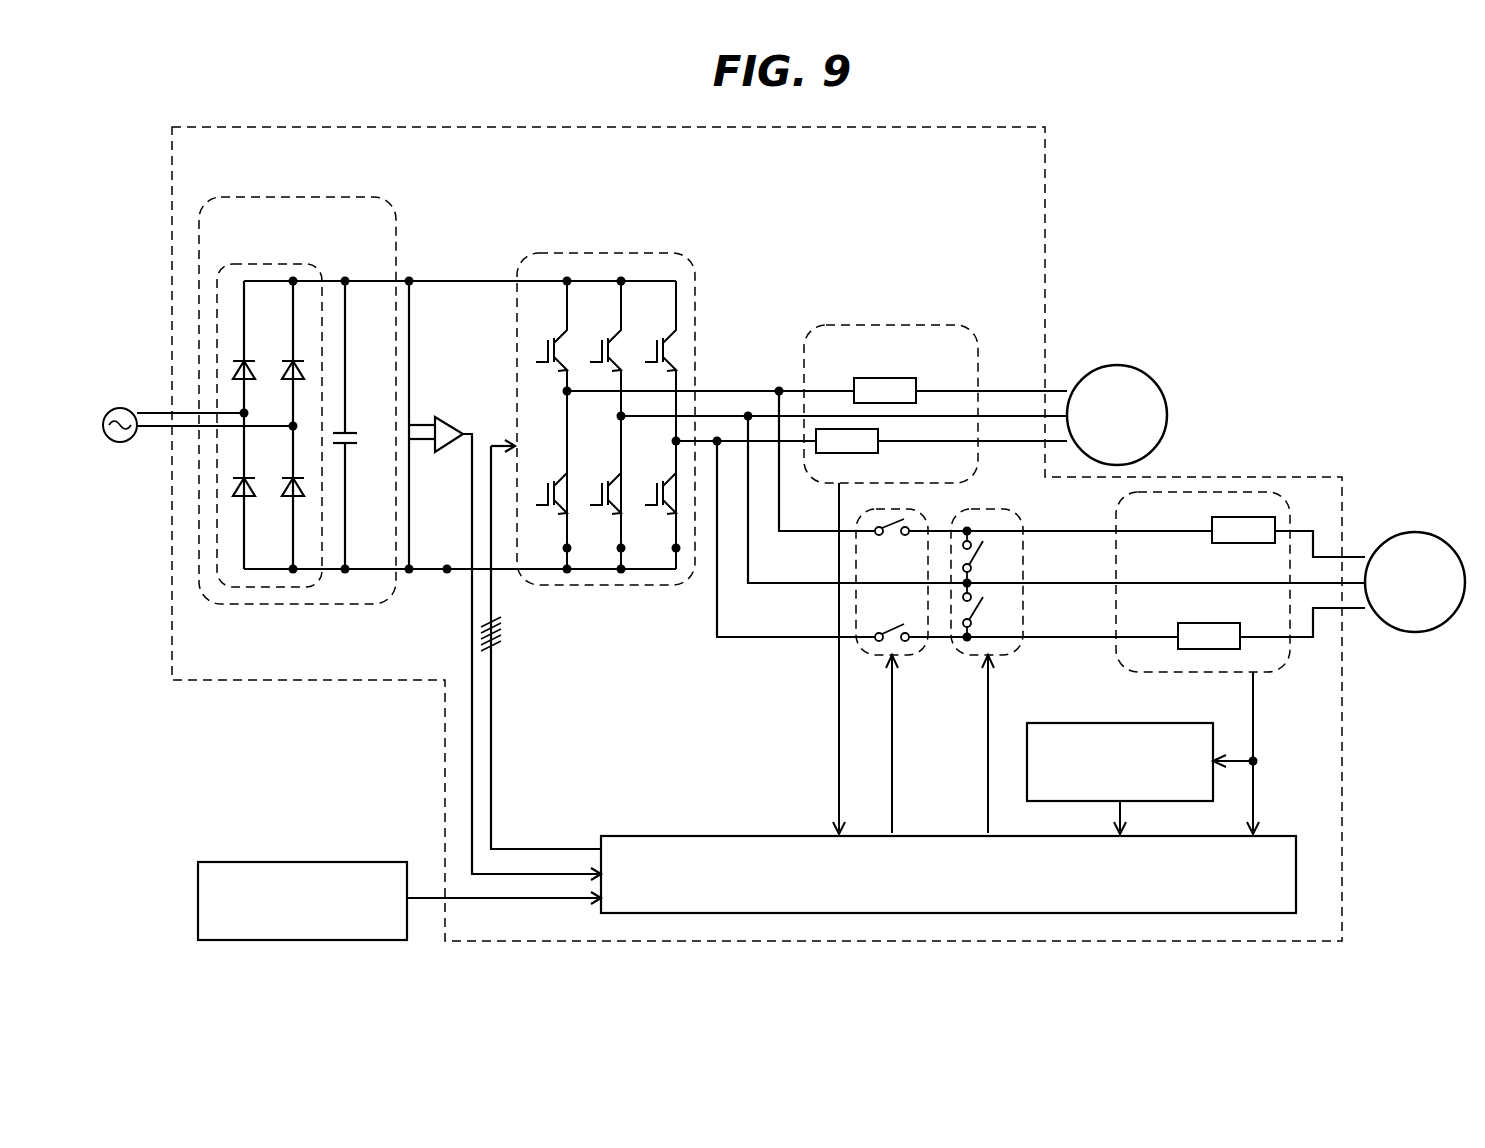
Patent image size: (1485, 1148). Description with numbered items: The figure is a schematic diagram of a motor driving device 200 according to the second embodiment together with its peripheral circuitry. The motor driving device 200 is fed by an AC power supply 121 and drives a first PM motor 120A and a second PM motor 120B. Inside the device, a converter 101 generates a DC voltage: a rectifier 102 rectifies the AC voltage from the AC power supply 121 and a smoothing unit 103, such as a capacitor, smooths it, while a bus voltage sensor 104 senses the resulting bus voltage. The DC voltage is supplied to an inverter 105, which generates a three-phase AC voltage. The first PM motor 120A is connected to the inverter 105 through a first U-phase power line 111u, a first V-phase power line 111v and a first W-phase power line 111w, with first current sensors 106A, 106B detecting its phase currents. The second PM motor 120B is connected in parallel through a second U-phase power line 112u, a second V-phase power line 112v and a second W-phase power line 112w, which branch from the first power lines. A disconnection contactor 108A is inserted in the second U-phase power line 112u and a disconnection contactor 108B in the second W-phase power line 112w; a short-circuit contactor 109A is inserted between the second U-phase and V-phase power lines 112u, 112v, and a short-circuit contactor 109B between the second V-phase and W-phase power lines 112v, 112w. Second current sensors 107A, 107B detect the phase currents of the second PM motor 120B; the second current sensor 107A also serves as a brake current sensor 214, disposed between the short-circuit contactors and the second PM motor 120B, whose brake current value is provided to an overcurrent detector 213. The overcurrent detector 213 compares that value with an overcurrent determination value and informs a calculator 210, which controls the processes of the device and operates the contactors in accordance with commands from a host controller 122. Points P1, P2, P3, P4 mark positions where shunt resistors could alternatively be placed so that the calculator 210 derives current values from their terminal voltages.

The motor driving device 200 is at (1046, 196).
The converter 101 is at (298, 197).
The rectifier 102 is at (273, 264).
The smoothing unit 103 is at (353, 432).
The bus voltage sensor 104 is at (440, 422).
The inverter 105 is at (604, 253).
The first current sensor 106A is at (888, 378).
The first current sensor 106B is at (880, 446).
The second current sensor 107A is at (1252, 543).
The brake current sensor 214 is at (1243, 530).
The second current sensor 107B is at (1203, 623).
The disconnection contactor 108A is at (896, 539).
The disconnection contactor 108B is at (898, 626).
The short-circuit contactor 109A is at (985, 530).
The short-circuit contactor 109B is at (985, 608).
The first U-phase power line 111u is at (710, 388).
The first V-phase power line 111v is at (728, 414).
The first W-phase power line 111w is at (766, 439).
The second U-phase power line 112u is at (804, 540).
The second V-phase power line 112v is at (790, 585).
The second W-phase power line 112w is at (750, 640).
The first PM motor 120A is at (1121, 365).
The second PM motor 120B is at (1417, 532).
The AC power supply 121 is at (123, 408).
The host controller 122 is at (304, 862).
The calculator 210 is at (719, 836).
The overcurrent detector 213 is at (1103, 723).
The point P1 is at (447, 573).
The point P2 is at (565, 548).
The point P3 is at (619, 548).
The point P4 is at (674, 548).